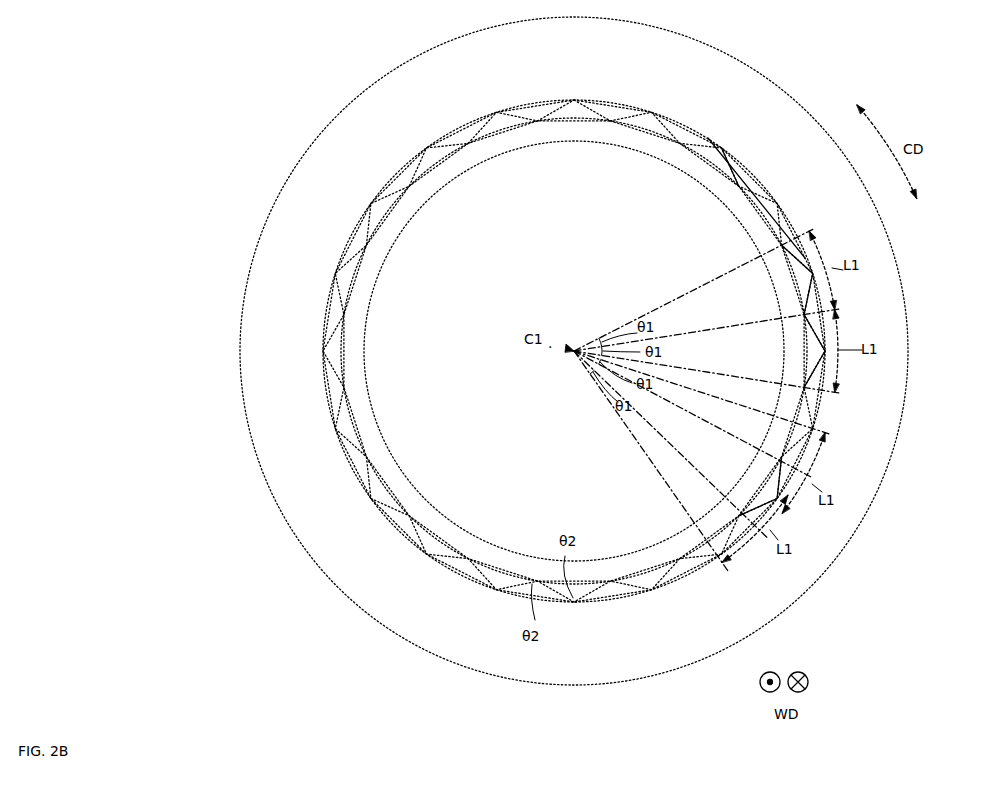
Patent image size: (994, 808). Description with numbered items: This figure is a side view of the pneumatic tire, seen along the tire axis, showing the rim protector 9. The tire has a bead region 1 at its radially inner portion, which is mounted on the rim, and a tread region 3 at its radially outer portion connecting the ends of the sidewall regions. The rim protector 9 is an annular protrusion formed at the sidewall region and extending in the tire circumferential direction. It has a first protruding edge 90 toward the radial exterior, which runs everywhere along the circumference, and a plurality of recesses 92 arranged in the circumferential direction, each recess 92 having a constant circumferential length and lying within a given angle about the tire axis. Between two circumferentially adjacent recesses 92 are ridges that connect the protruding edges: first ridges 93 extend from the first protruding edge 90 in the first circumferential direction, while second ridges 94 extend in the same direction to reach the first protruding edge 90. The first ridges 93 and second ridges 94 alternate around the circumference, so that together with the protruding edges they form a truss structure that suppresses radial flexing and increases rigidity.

The bead region 1 is at (385, 416).
The tread region 3 is at (238, 391).
The rim protector 9 is at (574, 335).
The first protruding edge 90 is at (700, 133).
The recess 92 is at (800, 282).
The first ridge 93 is at (762, 194).
The second ridge 94 is at (738, 164).